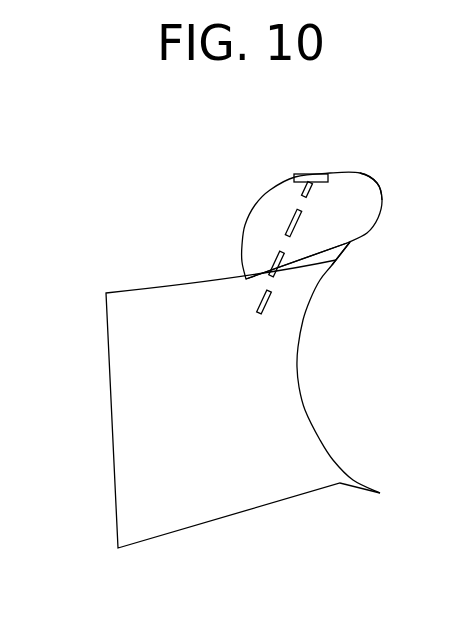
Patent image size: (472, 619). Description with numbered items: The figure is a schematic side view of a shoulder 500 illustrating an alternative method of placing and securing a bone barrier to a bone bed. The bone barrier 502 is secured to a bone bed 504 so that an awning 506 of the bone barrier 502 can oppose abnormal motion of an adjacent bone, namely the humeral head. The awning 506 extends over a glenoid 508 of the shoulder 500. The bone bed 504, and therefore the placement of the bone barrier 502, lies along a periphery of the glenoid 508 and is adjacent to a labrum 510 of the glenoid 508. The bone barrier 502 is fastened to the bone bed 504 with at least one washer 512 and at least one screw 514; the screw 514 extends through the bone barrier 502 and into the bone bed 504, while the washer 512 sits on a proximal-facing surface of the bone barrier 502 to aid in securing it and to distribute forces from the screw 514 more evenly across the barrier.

The shoulder 500 is at (120, 142).
The bone barrier 502 is at (252, 229).
The bone bed 504 is at (284, 270).
The awning 506 is at (375, 177).
The glenoid 508 is at (306, 413).
The labrum 510 is at (333, 256).
The washer 512 is at (290, 168).
The screw 514 is at (270, 267).